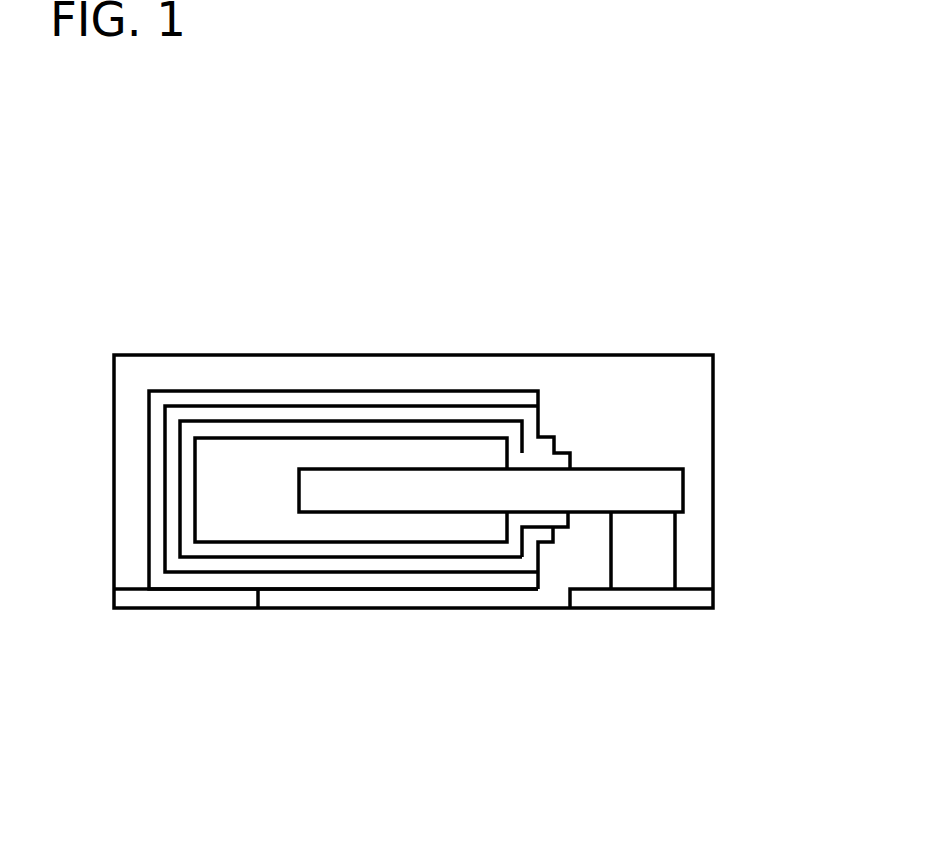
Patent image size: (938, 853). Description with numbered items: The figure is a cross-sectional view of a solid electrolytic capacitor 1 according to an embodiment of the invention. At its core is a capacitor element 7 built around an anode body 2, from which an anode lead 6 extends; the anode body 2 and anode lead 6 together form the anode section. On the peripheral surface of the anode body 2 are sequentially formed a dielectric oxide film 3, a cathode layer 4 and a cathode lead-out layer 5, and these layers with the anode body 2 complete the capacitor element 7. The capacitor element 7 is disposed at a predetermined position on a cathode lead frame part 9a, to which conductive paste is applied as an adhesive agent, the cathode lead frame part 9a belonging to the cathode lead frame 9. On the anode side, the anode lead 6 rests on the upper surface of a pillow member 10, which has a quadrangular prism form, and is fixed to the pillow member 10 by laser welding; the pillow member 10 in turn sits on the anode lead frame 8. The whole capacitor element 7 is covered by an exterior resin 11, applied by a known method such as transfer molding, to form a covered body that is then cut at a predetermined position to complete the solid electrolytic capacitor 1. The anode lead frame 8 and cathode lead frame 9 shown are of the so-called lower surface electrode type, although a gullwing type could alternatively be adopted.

The solid electrolytic capacitor 1 is at (762, 247).
The anode body 2 is at (443, 447).
The dielectric oxide film 3 is at (407, 430).
The cathode layer 4 is at (342, 412).
The cathode lead-out layer 5 is at (290, 400).
The anode lead 6 is at (637, 483).
The capacitor element 7 is at (595, 160).
The anode lead frame 8 is at (667, 603).
The cathode lead frame 9 is at (183, 603).
The cathode lead frame part 9a is at (235, 587).
The pillow member 10 is at (655, 550).
The exterior resin 11 is at (171, 370).